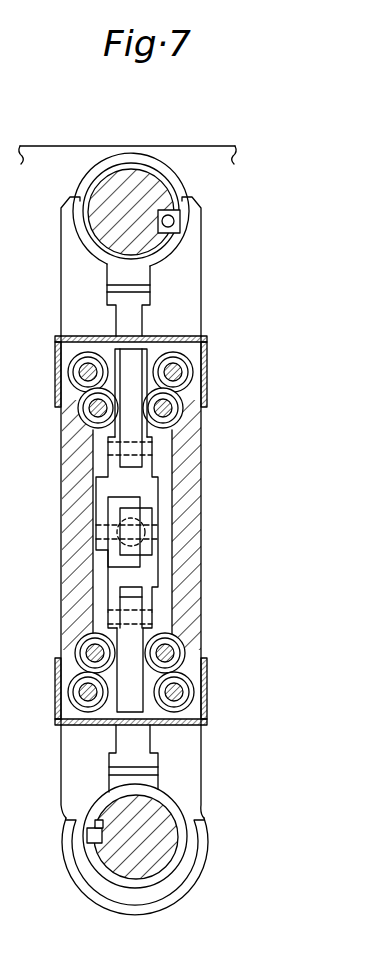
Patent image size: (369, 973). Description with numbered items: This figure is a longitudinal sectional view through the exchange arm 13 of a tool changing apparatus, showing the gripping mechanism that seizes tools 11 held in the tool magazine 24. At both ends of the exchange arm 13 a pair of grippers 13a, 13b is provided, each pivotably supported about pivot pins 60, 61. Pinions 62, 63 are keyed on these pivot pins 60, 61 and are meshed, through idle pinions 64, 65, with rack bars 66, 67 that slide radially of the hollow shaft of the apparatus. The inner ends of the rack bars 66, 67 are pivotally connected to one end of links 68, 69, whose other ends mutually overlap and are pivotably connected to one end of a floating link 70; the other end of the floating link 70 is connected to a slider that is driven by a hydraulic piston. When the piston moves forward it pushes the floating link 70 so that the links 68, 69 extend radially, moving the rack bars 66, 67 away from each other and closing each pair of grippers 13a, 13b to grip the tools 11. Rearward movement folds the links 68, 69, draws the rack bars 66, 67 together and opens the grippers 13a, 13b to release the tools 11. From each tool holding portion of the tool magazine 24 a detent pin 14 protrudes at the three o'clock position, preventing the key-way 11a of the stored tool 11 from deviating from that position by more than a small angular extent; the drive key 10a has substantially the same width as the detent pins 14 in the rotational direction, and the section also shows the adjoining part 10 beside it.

The tool magazine 24 is at (128, 137).
The tool 11 is at (142, 185).
The key-way 11a is at (180, 201).
The detent pin 14 is at (176, 224).
The gripper 13a is at (63, 265).
The exchange arm 13 is at (211, 333).
The pivot pin 60 is at (89, 366).
The pinion 62 is at (69, 372).
The rack bar 66 is at (135, 386).
The idle pinion 64 is at (78, 414).
The link 68 is at (143, 485).
The floating link 70 is at (123, 514).
The link 69 is at (152, 578).
The idle pinion 65 is at (74, 650).
The rack bar 67 is at (133, 677).
The pinion 63 is at (68, 705).
The pivot pin 61 is at (88, 702).
The gripper 13b is at (70, 778).
The drive key 10a is at (87, 835).
The first pipe clamp ring 10 is at (172, 893).